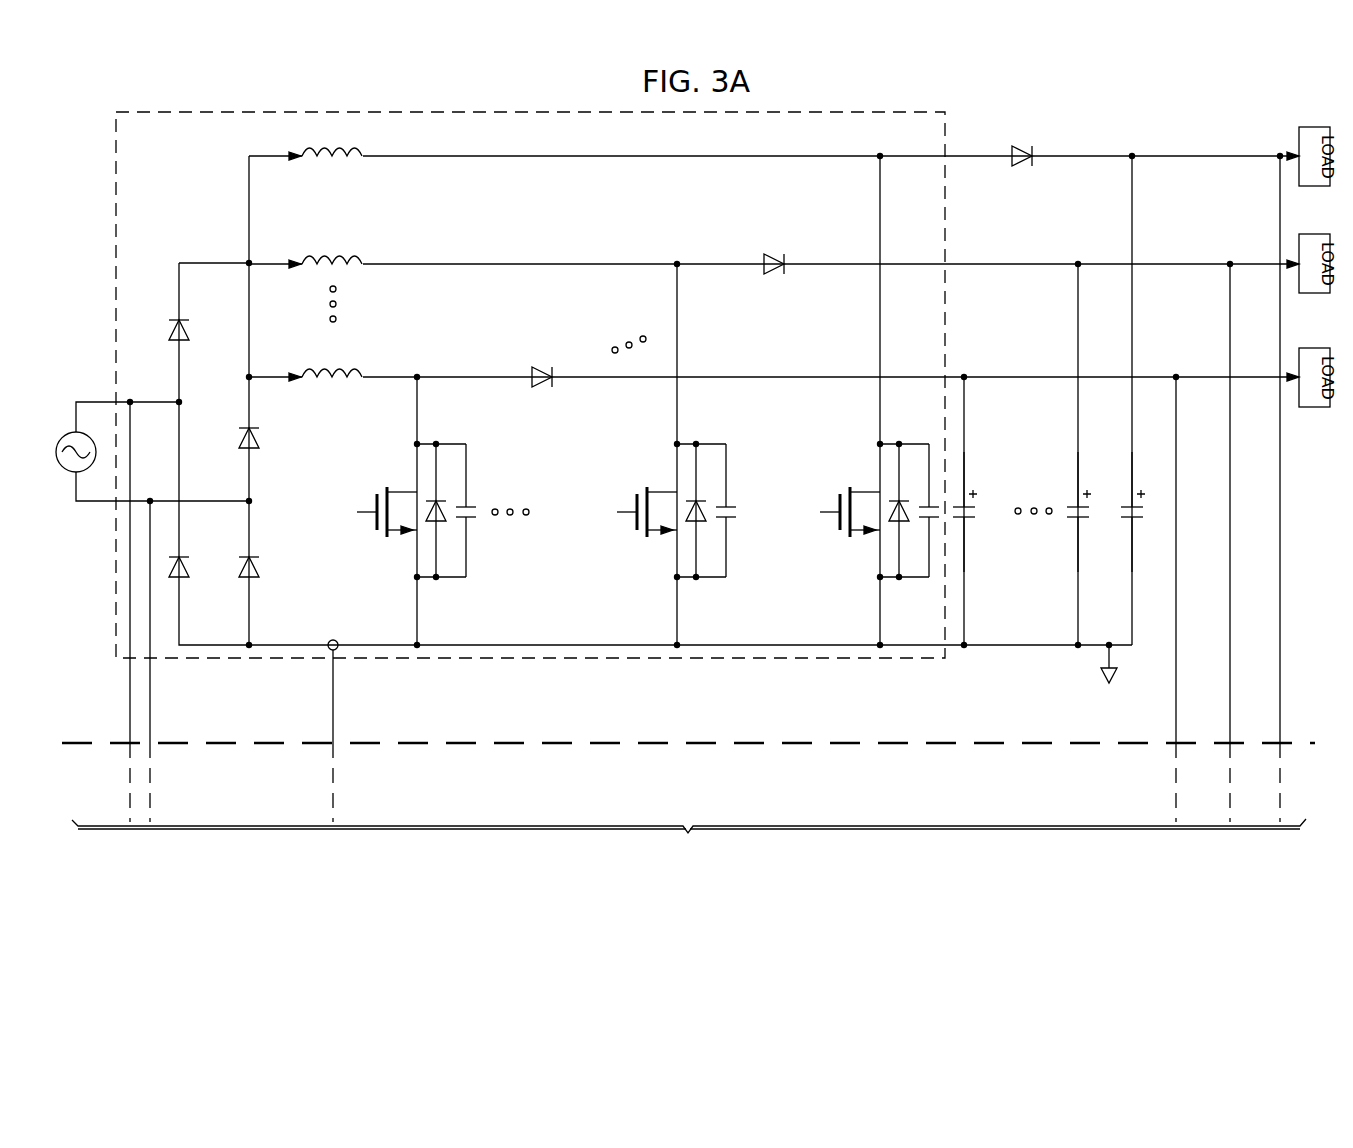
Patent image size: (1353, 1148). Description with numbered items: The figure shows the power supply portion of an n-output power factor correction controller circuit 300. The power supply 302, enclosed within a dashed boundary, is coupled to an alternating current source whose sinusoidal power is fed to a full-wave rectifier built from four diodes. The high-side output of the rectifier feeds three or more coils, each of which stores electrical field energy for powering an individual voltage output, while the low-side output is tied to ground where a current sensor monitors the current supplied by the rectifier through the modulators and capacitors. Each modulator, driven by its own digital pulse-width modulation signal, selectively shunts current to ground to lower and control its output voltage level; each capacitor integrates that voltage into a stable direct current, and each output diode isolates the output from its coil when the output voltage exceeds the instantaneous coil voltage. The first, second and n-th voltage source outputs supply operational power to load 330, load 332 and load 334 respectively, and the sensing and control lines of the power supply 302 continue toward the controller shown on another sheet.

The PFC controller circuit 300 is at (142, 836).
The power supply 302 is at (258, 668).
The load 330 is at (1315, 125).
The load 332 is at (1315, 232).
The load 334 is at (1315, 345).